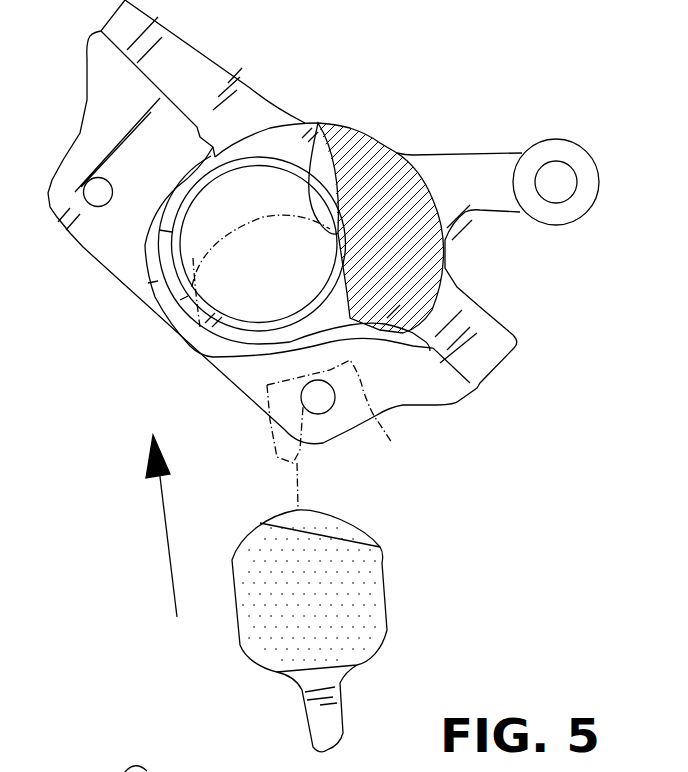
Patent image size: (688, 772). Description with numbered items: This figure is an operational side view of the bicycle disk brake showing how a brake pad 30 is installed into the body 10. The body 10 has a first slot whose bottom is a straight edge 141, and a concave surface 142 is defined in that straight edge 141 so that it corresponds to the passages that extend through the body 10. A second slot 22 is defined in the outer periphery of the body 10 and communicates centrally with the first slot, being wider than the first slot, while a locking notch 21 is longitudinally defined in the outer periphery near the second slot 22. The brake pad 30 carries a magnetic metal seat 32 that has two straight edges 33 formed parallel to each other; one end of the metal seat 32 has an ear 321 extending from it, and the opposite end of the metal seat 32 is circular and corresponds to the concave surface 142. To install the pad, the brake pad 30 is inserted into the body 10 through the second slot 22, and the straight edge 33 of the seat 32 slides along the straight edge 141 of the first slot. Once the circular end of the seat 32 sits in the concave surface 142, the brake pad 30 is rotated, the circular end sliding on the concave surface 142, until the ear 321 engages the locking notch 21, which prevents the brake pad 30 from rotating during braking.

The body 10 is at (390, 131).
The straight edge 141 is at (352, 290).
The concave surface 142 is at (318, 123).
The locking notch 21 is at (167, 279).
The second slot 22 is at (323, 313).
The brake pad 30 is at (352, 590).
The metal seat 32 is at (342, 612).
The ear 321 is at (333, 718).
The straight edge 33 is at (382, 560).